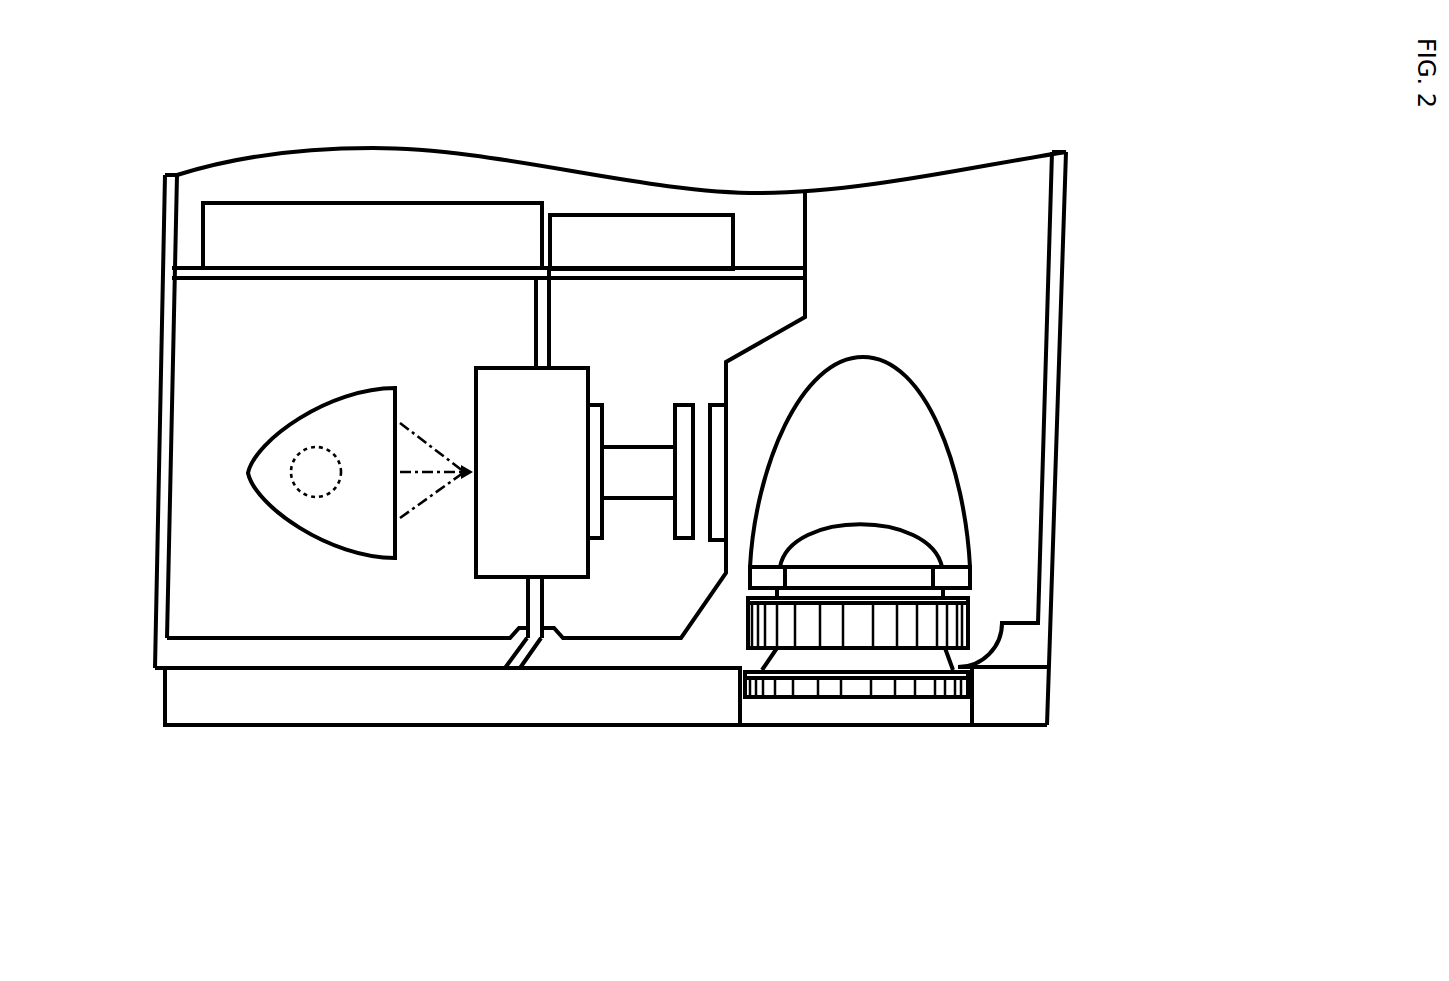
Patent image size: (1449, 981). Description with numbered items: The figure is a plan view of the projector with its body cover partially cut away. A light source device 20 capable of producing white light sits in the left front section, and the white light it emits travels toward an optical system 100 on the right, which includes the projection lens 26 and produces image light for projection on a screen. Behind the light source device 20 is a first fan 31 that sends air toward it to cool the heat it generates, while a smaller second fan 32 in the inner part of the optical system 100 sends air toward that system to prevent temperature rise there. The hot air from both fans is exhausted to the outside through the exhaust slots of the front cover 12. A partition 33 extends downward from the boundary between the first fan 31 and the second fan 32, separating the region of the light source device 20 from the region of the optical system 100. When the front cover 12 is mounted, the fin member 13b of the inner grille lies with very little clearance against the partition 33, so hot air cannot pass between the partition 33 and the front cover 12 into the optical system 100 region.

The optical system 100 is at (738, 313).
The front cover 12 is at (278, 695).
The fin member 13b is at (533, 672).
The light source device 20 is at (245, 449).
The projection lens 26 is at (803, 697).
The first fan 31 is at (275, 228).
The second fan 32 is at (625, 238).
The partition 33 is at (532, 323).